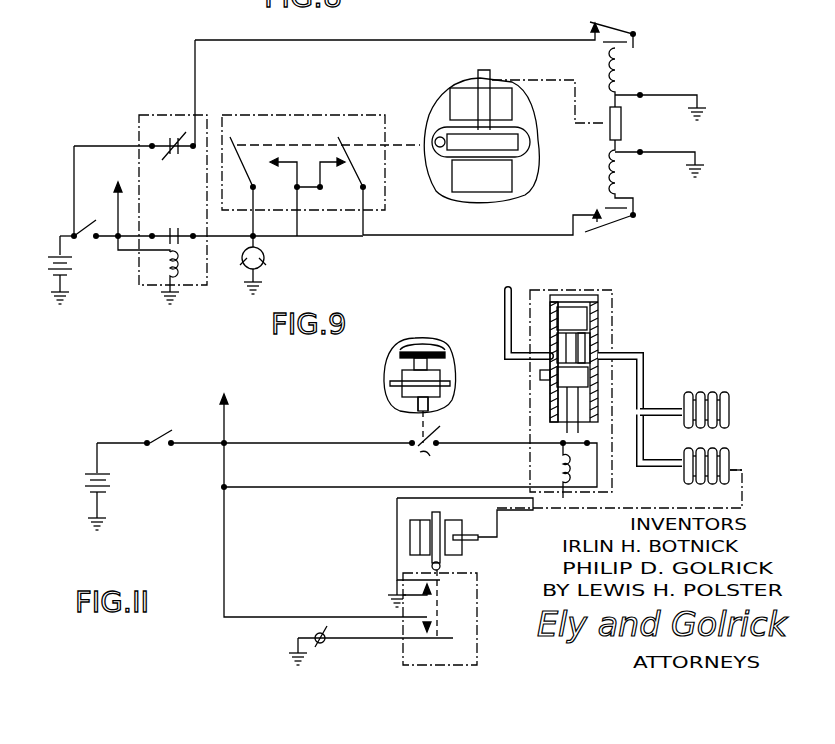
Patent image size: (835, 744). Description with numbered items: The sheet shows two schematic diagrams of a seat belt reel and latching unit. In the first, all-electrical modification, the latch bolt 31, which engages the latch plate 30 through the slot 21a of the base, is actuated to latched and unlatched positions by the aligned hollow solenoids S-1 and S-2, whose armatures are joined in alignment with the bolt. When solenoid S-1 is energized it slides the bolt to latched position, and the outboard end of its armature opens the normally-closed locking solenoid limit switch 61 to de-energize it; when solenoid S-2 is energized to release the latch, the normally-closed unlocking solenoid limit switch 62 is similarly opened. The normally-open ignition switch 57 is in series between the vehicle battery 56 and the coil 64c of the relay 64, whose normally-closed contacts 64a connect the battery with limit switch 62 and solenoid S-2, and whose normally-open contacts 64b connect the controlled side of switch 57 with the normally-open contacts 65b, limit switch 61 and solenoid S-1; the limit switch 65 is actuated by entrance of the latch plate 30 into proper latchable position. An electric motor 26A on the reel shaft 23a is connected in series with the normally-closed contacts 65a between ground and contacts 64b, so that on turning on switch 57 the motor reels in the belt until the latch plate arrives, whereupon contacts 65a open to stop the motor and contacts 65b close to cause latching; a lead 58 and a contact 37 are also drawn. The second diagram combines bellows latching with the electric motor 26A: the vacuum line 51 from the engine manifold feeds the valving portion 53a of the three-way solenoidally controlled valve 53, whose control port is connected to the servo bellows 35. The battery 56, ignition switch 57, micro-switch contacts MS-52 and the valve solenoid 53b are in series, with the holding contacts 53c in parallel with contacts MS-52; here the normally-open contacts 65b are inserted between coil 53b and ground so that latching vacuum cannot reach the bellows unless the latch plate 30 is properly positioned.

In FIG. 9, the slot 21a is at (526, 140).
In FIG. 9, the motor 23a is at (270, 256).
In FIG. 9, the electric motor 26A is at (270, 267).
In FIG. 11, the electric motor 26A is at (318, 647).
In FIG. 9, the latch plate 30 is at (524, 148).
In FIG. 11, the latch plate 30 is at (452, 380).
In FIG. 9, the latch bolt 31 is at (493, 70).
In FIG. 11, the latch bolt 31 is at (445, 400).
In FIG. 11, the vacuum or servo bellows 35 is at (447, 349).
In FIG. 11, the contact 37 is at (462, 552).
In FIG. 11, the vacuum line 51 is at (504, 294).
In FIG. 11, the three-way solenoidally controlled valve 53 is at (577, 296).
In FIG. 11, the valving portion 53a is at (570, 345).
In FIG. 11, the solenoid of the three-way valve 53b is at (558, 470).
In FIG. 11, the holding contacts 53c is at (572, 437).
In FIG. 9, the vehicle battery 56 is at (54, 263).
In FIG. 11, the vehicle battery 56 is at (86, 488).
In FIG. 9, the ignition lock switch 57 is at (78, 228).
In FIG. 11, the ignition lock switch 57 is at (166, 436).
In FIG. 9, the lead 58 is at (120, 216).
In FIG. 11, the lead 58 is at (224, 427).
In FIG. 9, the locking solenoid limit switch 61 is at (614, 230).
In FIG. 9, the unlocking solenoid limit switch 62 is at (620, 20).
In FIG. 9, the relay 64 is at (176, 115).
In FIG. 9, the normally-closed relay contacts 64a is at (174, 159).
In FIG. 9, the normally-open relay contacts 64b is at (175, 226).
In FIG. 9, the relay coil 64c is at (174, 270).
In FIG. 9, the limit switch 65 is at (314, 112).
In FIG. 11, the limit switch 65 is at (480, 617).
In FIG. 9, the normally-closed limit switch contacts 65a is at (250, 178).
In FIG. 9, the normally-open limit switch contacts 65b is at (362, 176).
In FIG. 11, the normally-open limit switch contacts 65b is at (395, 594).
In FIG. 11, the micro-switch MS-52 is at (410, 445).
In FIG. 9, the locking solenoid S-1 is at (628, 182).
In FIG. 9, the unlocking solenoid S-2 is at (627, 60).